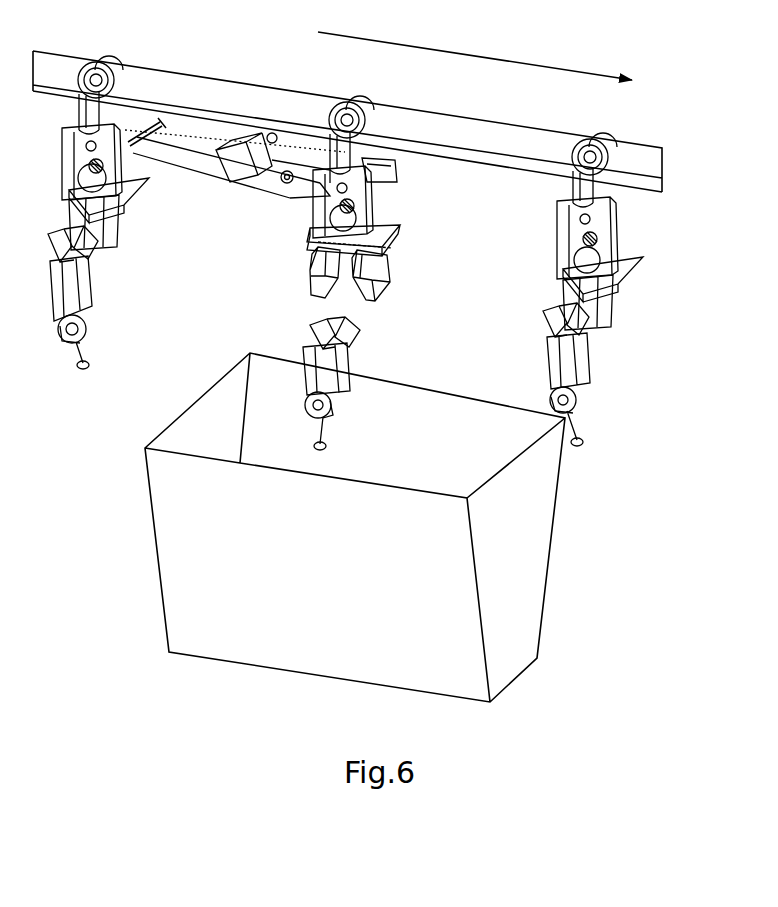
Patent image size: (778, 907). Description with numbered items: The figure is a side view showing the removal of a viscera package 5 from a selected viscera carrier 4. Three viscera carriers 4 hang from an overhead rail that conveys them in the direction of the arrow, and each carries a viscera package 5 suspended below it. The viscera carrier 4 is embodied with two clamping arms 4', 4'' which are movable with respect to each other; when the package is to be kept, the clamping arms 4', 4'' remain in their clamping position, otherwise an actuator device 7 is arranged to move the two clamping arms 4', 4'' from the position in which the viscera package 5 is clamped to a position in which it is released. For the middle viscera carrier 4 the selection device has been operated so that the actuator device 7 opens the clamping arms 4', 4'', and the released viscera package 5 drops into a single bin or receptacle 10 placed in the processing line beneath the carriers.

The viscera carrier 4 is at (354, 280).
The clamping arm 4' is at (402, 301).
The clamping arm 4'' is at (277, 292).
The viscera package 5 is at (345, 405).
The actuator device 7 is at (233, 178).
The bin or receptacle 10 is at (237, 597).